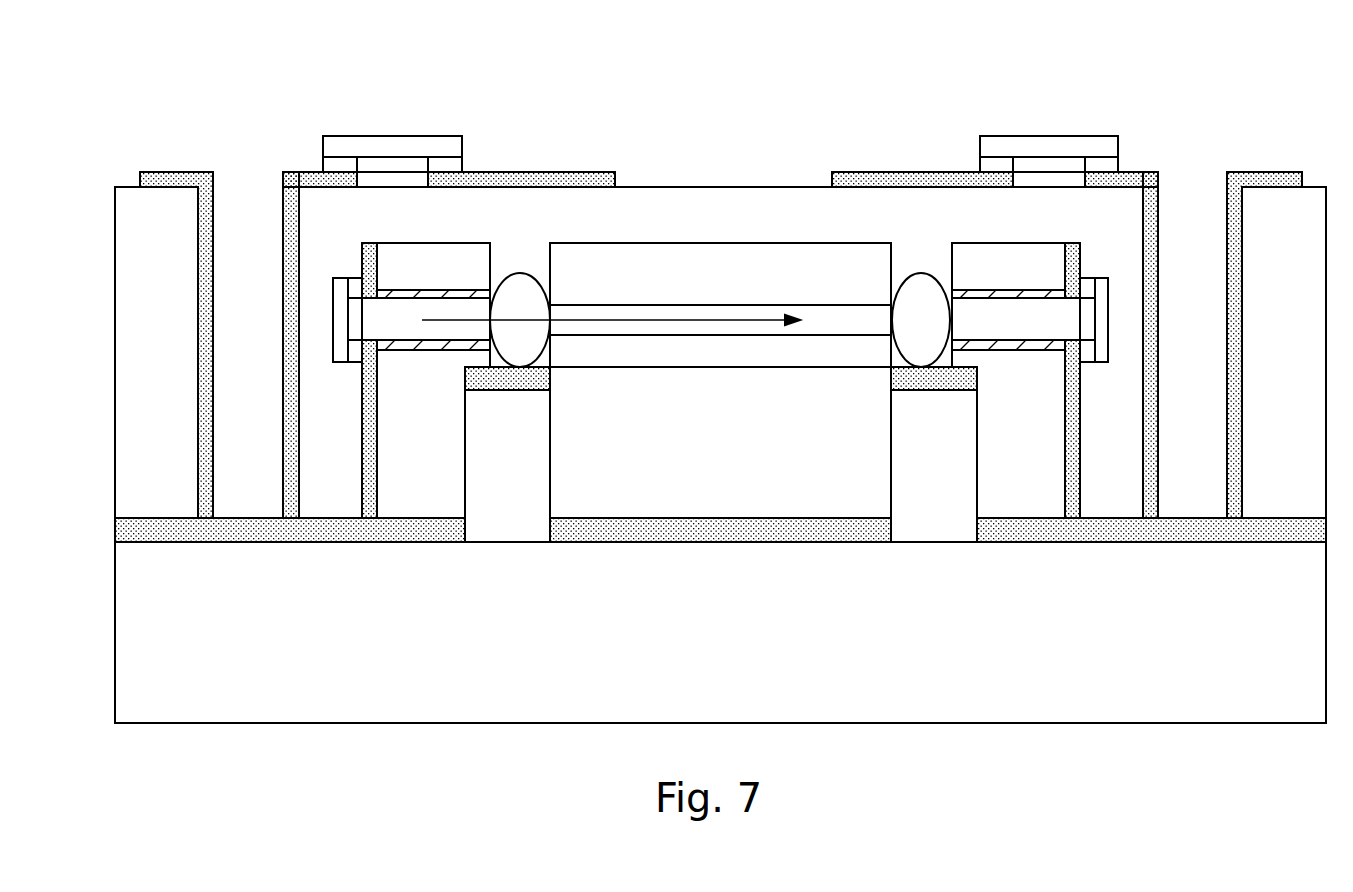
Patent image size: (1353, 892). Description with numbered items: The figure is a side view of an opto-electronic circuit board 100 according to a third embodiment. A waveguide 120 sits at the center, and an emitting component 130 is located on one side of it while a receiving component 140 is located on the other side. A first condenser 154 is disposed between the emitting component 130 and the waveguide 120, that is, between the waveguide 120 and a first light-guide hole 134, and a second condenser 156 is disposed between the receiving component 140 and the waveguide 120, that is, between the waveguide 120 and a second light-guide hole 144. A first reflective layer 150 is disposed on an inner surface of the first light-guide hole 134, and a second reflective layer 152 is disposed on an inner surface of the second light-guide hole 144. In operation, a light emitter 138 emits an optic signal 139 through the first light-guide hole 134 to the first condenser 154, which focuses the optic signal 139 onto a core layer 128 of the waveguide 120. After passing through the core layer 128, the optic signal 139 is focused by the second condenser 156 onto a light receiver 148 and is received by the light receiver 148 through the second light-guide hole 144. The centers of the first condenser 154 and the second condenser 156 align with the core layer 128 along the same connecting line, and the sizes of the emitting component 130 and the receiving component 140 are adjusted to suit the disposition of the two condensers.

The opto-electronic circuit board 100 is at (141, 70).
The waveguide 120 is at (762, 267).
The core layer 128 is at (827, 320).
The emitting component 130 is at (422, 484).
The first light-guide hole 134 is at (399, 310).
The light emitter 138 is at (340, 280).
The optic signal 139 is at (707, 320).
The receiving component 140 is at (1013, 484).
The second light-guide hole 144 is at (1043, 310).
The light receiver 148 is at (1100, 280).
The first reflective layer 150 is at (460, 298).
The second reflective layer 152 is at (980, 290).
The first condenser 154 is at (520, 290).
The second condenser 156 is at (922, 290).